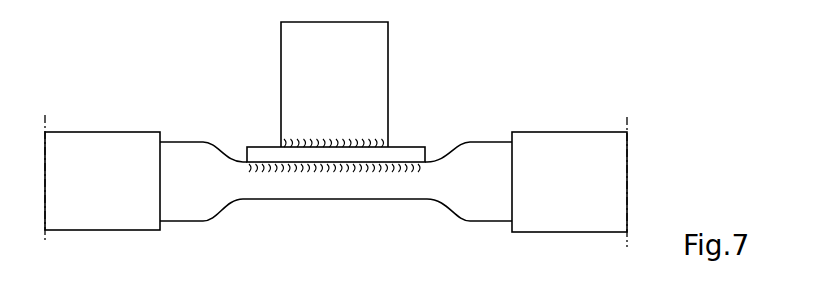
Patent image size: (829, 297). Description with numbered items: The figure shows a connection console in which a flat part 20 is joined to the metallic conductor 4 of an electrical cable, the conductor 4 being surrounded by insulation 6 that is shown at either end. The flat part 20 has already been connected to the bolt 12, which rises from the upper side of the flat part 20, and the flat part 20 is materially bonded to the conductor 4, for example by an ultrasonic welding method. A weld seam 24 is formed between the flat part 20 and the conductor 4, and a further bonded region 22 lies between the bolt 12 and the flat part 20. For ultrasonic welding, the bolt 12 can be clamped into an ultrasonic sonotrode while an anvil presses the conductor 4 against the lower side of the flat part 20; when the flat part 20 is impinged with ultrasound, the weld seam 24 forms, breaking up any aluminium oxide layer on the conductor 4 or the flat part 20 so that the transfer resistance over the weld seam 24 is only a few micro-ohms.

The conductor 4 is at (483, 167).
The insulation 6 is at (583, 150).
The bolt 12 is at (372, 59).
The flat part 20 is at (263, 147).
The upper adhesive layer 22 is at (367, 140).
The weld seam 24 is at (318, 170).